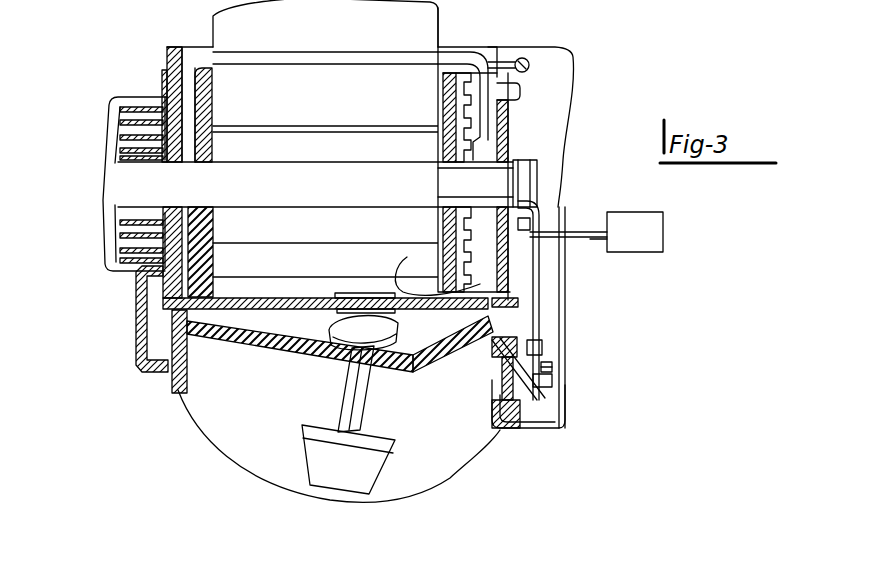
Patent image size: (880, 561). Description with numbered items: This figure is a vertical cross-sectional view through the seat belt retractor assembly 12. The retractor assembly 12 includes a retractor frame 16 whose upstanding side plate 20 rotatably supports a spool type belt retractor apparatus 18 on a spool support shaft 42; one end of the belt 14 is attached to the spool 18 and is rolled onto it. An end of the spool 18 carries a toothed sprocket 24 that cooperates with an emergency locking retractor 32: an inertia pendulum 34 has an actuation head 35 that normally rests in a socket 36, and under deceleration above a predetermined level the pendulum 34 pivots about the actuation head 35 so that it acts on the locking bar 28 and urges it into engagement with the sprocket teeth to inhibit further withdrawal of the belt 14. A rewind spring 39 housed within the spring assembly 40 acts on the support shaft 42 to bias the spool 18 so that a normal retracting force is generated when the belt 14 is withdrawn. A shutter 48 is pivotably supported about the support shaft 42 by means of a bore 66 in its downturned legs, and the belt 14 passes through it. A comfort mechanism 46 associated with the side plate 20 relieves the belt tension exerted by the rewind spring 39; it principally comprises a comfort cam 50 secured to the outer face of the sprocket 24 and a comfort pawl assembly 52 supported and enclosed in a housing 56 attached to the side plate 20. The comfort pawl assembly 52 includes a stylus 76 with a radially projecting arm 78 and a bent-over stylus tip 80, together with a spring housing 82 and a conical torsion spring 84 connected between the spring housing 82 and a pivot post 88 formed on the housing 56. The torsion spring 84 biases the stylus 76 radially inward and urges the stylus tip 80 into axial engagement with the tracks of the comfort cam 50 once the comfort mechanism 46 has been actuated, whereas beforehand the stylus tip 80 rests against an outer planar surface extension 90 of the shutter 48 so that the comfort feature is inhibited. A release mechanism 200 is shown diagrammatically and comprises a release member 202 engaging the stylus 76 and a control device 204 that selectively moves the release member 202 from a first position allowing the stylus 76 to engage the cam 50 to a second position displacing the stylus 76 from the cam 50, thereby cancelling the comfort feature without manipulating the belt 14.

The retractor assembly 12 is at (154, 388).
The belt 14 is at (418, 27).
The retractor frame 16 is at (548, 88).
The spool type belt retractor apparatus 18 is at (548, 313).
The side plate 20 is at (502, 125).
The toothed sprocket 24 is at (480, 284).
The locking bar 28 is at (213, 312).
The emergency locking retractor 32 is at (435, 413).
The inertia pendulum 34 is at (332, 394).
The actuation head 35 is at (327, 352).
The socket 36 is at (395, 373).
The rewind spring 39 is at (136, 276).
The spring assembly 40 is at (102, 255).
The spool support shaft 42 is at (127, 186).
The comfort mechanism 46 is at (574, 371).
The shutter 48 is at (210, 60).
The comfort cam 50 is at (485, 146).
The comfort pawl assembly 52 is at (552, 410).
The housing 56 is at (518, 392).
The bore 66 is at (112, 108).
The stylus 76 is at (568, 298).
The radially projecting arm 78 is at (532, 222).
The stylus tip 80 is at (520, 210).
The spring housing 82 is at (553, 395).
The conical torsion spring 84 is at (548, 345).
The pivot post 88 is at (549, 405).
The outer planar surface extension 90 is at (548, 218).
The release mechanism 200 is at (672, 265).
The release member 202 is at (665, 290).
The control device 204 is at (644, 232).